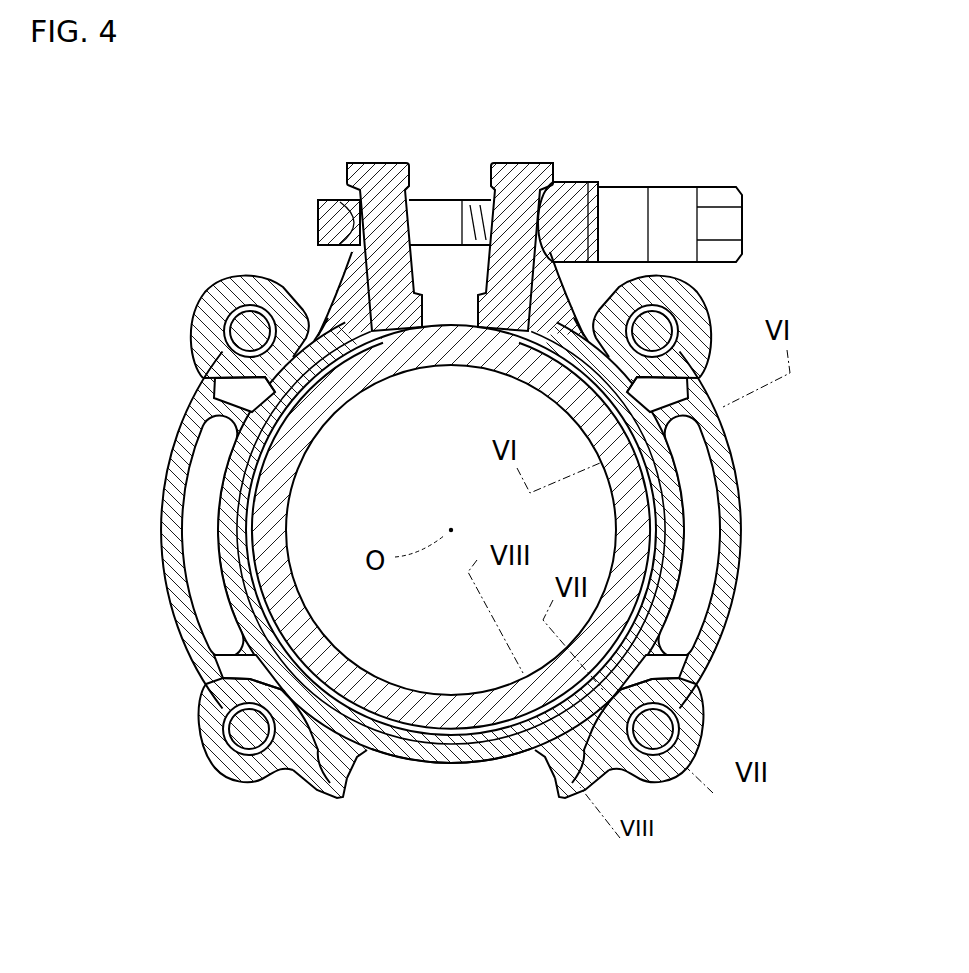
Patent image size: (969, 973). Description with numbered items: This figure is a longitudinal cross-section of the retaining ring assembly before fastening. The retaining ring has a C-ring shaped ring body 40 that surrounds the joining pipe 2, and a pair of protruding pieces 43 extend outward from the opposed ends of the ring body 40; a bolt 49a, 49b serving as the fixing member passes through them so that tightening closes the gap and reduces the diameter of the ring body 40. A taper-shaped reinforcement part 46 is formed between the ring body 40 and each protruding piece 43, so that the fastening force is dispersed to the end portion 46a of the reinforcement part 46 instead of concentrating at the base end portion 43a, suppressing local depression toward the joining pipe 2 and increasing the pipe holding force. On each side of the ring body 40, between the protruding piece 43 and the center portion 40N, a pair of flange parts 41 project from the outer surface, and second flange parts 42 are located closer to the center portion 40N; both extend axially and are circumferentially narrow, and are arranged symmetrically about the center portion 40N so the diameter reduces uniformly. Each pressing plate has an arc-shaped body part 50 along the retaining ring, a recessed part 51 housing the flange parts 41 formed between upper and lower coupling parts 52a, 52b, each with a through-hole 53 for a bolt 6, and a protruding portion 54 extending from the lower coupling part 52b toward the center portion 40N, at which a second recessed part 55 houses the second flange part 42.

The joining pipe 2 is at (346, 410).
The bolt 6 is at (250, 328).
The ring body 40 is at (215, 520).
The center portion of the ring body 40N is at (447, 770).
The flange part 41 is at (215, 445).
The second flange part 42 is at (352, 772).
The protruding piece 43 is at (352, 168).
The base end portion of the protruding piece 43a is at (360, 225).
The reinforcement part 46 is at (325, 305).
The end portion of the reinforcement part 46a is at (337, 293).
The bolt 49a is at (317, 210).
The bolt 49b is at (713, 195).
The body part 50 is at (162, 490).
The recessed part 51 is at (200, 587).
The upper coupling part 52a is at (212, 293).
The lower coupling part 52b is at (203, 762).
The through-hole 53 is at (227, 343).
The protruding portion 54 is at (322, 794).
The second recessed part 55 is at (293, 776).